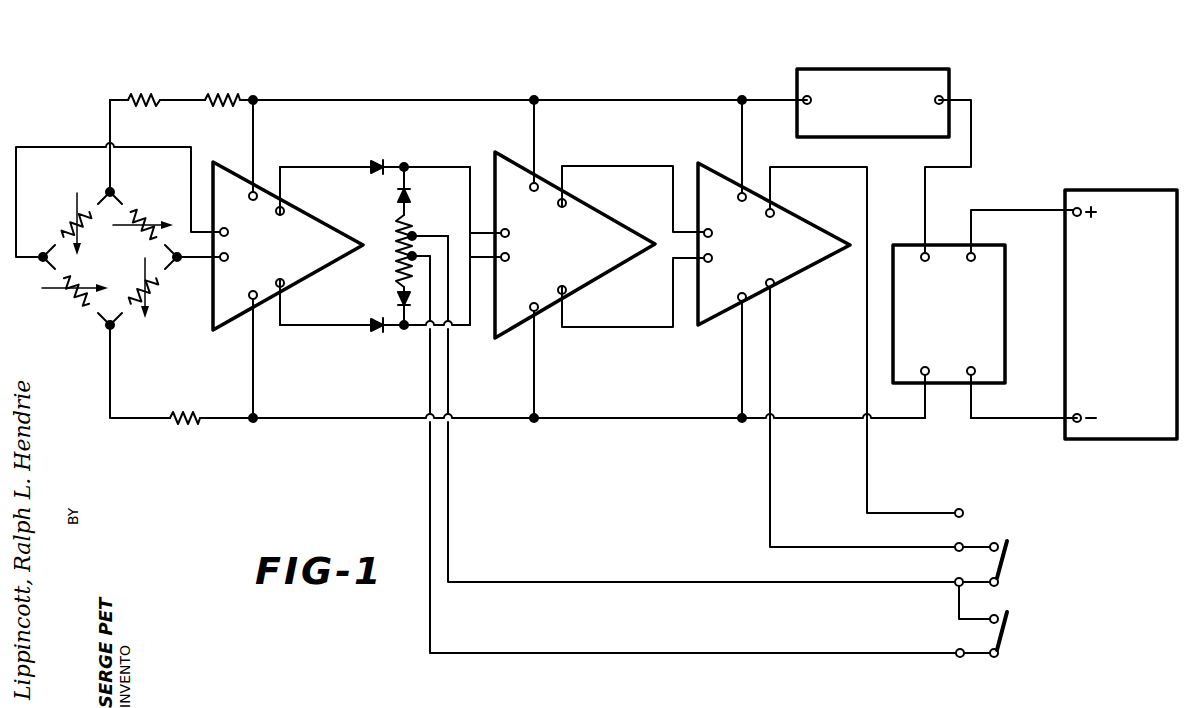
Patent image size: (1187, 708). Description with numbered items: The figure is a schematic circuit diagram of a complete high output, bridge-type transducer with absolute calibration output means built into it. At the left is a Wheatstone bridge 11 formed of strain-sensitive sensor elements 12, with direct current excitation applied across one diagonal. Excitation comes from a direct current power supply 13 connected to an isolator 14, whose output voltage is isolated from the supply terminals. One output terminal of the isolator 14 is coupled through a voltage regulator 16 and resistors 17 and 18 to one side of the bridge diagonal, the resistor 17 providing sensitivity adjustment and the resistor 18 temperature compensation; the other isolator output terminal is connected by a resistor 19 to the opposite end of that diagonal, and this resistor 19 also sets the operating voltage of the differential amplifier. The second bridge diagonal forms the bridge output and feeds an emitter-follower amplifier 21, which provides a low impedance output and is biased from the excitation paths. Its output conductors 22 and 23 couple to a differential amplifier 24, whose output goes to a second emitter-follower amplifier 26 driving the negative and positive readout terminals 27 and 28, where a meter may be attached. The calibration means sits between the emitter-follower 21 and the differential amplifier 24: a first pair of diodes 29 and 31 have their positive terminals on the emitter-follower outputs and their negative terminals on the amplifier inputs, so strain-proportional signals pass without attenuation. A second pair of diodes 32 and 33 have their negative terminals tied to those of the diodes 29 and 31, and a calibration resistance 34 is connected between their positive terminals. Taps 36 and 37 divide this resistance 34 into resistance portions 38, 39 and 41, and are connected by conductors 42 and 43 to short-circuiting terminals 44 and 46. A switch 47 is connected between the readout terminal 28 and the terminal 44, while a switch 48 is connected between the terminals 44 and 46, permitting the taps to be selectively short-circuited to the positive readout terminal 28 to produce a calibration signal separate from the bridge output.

The Wheatstone bridge 11 is at (109, 256).
The strain-sensitive sensor elements 12 is at (152, 212).
The direct current power supply 13 is at (1064, 436).
The isolator 14 is at (940, 246).
The voltage regulator 16 is at (878, 68).
The resistor 17 is at (157, 76).
The resistor 18 is at (239, 76).
The resistor 19 is at (197, 396).
The emitter-follower amplifier 21 is at (219, 322).
The output conductor 22 is at (325, 148).
The output conductor 23 is at (310, 328).
The differential amplifier 24 is at (503, 342).
The second emitter-follower amplifier 26 is at (705, 332).
The negative readout terminal 27 is at (978, 496).
The positive readout terminal 28 is at (958, 538).
The diode 29 is at (394, 138).
The diode 31 is at (380, 332).
The diode 32 is at (413, 196).
The diode 33 is at (390, 300).
The calibration resistance 34 is at (407, 246).
The tap 36 is at (418, 236).
The tap 37 is at (418, 256).
The resistance portion 38 is at (396, 219).
The resistance portion 39 is at (396, 246).
The resistance portion 41 is at (396, 274).
The conductor 42 is at (560, 566).
The conductor 43 is at (560, 638).
The short-circuiting terminal 44 is at (955, 588).
The short-circuiting terminal 46 is at (958, 660).
The switch 47 is at (1010, 558).
The switch 48 is at (1010, 632).